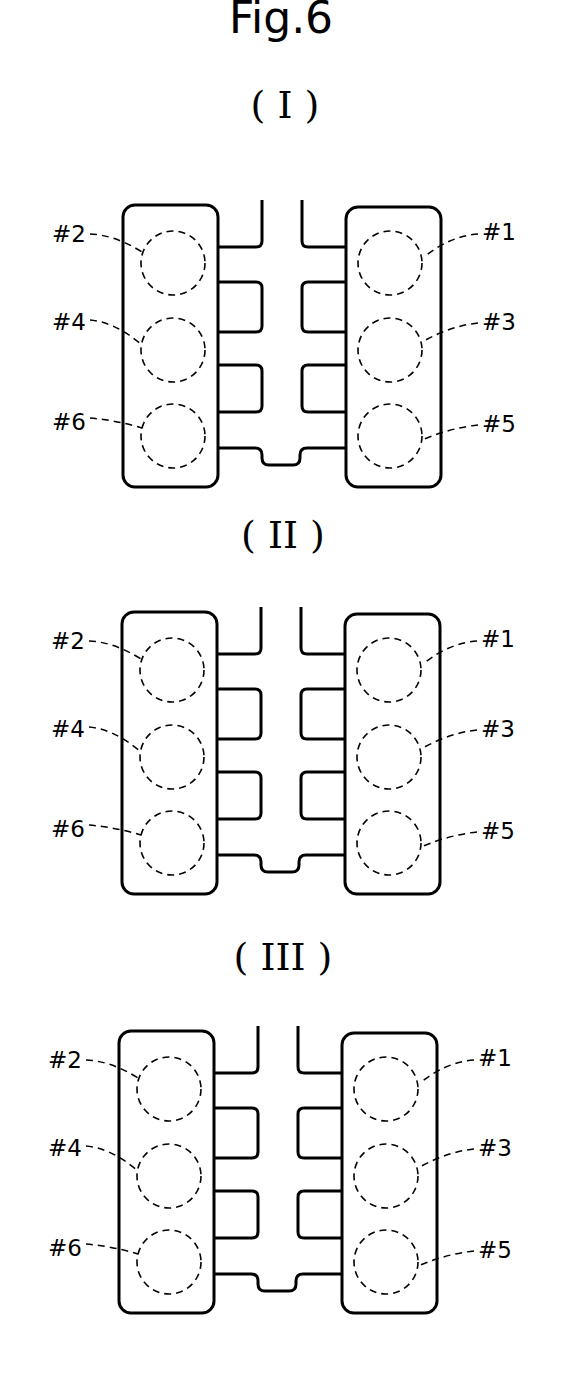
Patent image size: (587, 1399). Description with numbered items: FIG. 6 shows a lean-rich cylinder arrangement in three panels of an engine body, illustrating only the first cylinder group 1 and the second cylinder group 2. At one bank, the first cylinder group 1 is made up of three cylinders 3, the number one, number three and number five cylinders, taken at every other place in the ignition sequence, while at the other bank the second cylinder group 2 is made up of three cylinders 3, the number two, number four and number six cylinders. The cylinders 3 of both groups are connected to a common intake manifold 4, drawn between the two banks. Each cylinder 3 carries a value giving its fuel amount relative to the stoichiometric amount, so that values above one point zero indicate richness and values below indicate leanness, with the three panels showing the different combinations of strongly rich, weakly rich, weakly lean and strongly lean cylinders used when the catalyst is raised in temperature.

The first cylinder group 1 is at (420, 204).
The second cylinder group 2 is at (186, 203).
The cylinder 3 is at (190, 234).
The intake manifold 4 is at (268, 449).